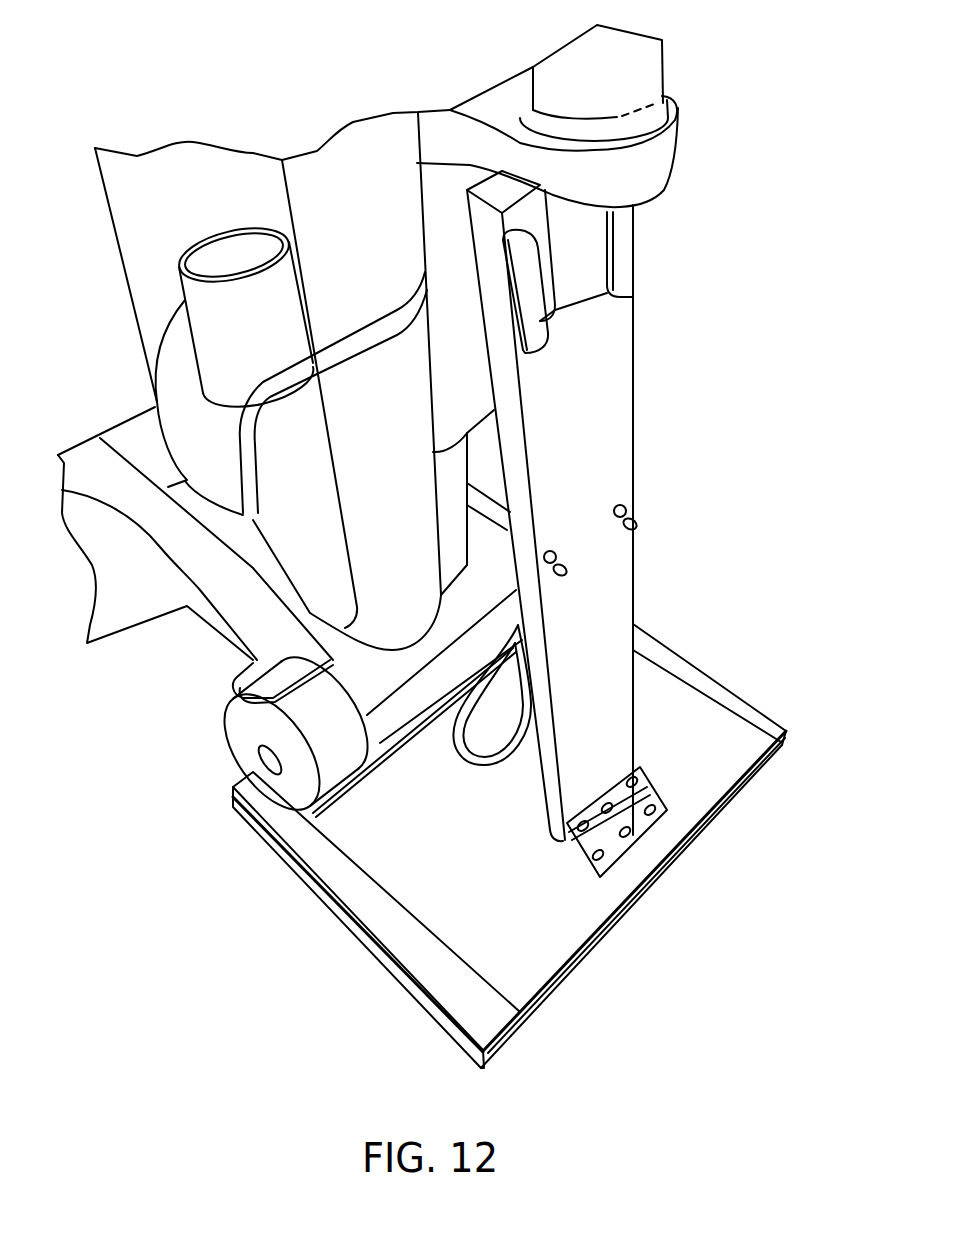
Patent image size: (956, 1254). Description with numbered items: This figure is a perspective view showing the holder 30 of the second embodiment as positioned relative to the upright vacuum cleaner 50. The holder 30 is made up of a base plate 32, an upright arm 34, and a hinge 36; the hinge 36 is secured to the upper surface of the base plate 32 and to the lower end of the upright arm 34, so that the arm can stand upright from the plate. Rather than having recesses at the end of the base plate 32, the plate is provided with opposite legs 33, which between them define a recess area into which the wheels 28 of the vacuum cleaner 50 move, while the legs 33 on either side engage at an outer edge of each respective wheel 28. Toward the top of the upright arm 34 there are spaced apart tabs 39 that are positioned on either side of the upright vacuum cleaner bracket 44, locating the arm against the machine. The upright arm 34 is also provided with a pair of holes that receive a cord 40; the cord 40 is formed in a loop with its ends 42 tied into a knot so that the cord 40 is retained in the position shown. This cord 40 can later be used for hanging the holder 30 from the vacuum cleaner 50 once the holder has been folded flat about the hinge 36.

The wheels 28 is at (230, 705).
The holder 30 is at (525, 836).
The base plate 32 is at (498, 886).
The legs 33 is at (657, 643).
The upright arm 34 is at (585, 420).
The hinge 36 is at (620, 847).
The tabs 39 is at (537, 324).
The cord 40 is at (462, 748).
The ends 42 is at (563, 570).
The upright vacuum cleaner bracket 44 is at (577, 233).
The vacuum cleaner 50 is at (360, 172).